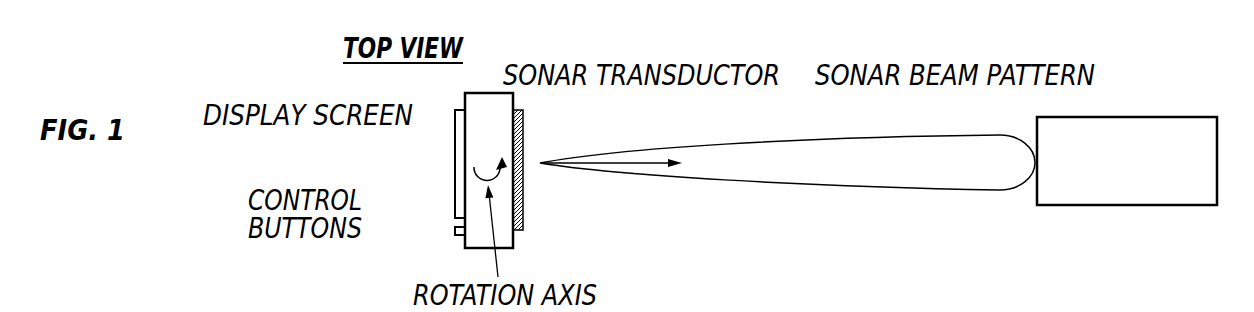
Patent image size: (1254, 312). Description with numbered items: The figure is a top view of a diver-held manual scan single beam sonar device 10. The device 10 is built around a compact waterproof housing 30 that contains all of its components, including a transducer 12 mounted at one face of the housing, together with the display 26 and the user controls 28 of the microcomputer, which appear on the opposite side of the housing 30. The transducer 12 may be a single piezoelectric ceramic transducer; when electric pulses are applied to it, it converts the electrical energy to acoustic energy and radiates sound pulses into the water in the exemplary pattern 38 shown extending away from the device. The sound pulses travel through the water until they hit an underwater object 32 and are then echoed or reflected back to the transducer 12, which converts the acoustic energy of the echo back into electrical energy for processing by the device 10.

The manual scan single beam sonar device 10 is at (543, 28).
The transducer 12 is at (560, 161).
The display 26 is at (455, 171).
The user controls 28 is at (455, 230).
The waterproof housing 30 is at (523, 185).
The underwater object 32 is at (1127, 184).
The sound pulse pattern 38 is at (787, 138).